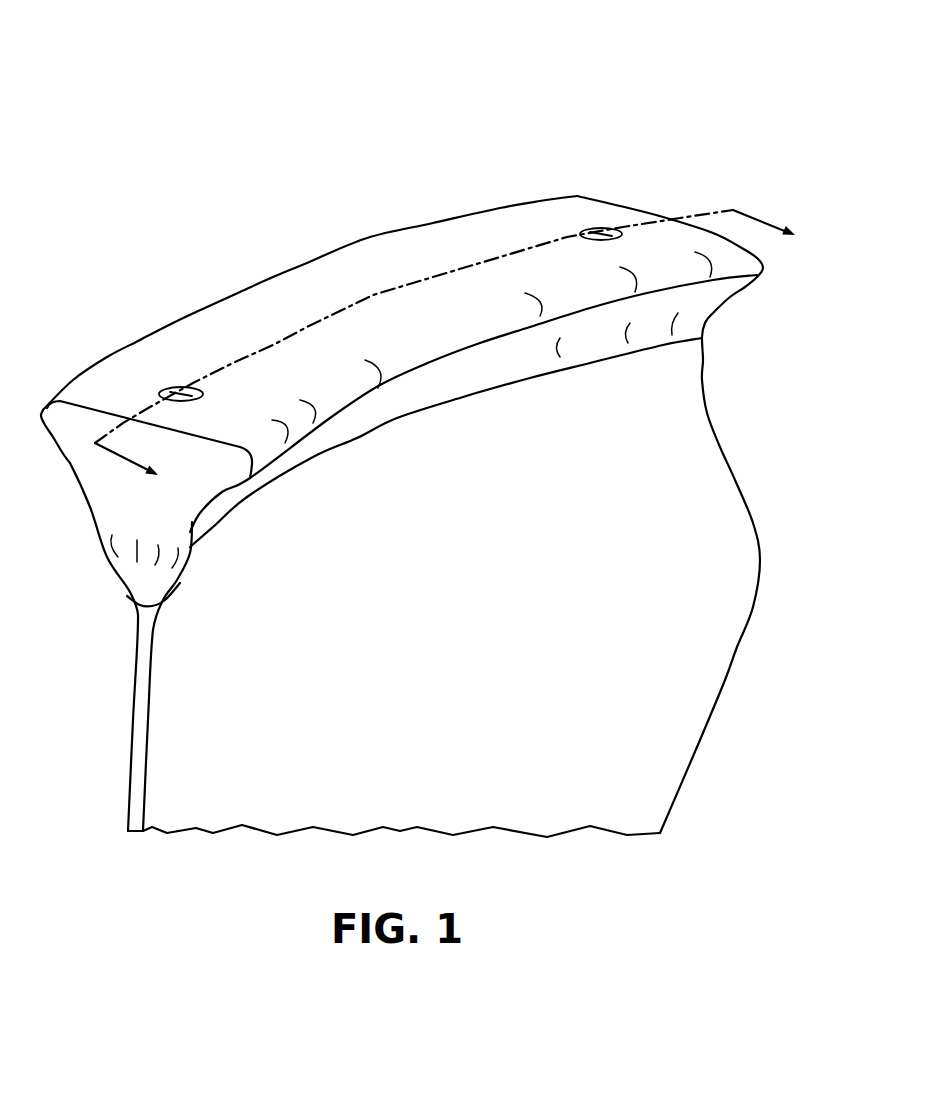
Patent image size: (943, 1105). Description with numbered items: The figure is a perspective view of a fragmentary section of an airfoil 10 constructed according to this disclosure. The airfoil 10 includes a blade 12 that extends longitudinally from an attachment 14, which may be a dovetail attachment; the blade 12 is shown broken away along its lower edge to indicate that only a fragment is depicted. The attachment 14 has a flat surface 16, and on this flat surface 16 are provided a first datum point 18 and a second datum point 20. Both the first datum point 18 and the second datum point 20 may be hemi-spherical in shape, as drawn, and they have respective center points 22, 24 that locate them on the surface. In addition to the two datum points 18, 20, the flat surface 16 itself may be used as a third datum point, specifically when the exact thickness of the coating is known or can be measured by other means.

The airfoil 10 is at (663, 95).
The blade 12 is at (735, 480).
The attachment 14 is at (95, 460).
The flat surface 16 is at (330, 297).
The first datum point 18 is at (578, 227).
The second datum point 20 is at (158, 385).
The center point 22 is at (600, 228).
The center point 24 is at (173, 390).